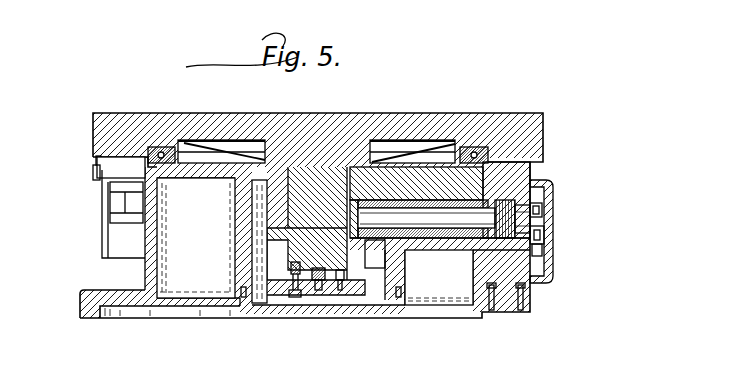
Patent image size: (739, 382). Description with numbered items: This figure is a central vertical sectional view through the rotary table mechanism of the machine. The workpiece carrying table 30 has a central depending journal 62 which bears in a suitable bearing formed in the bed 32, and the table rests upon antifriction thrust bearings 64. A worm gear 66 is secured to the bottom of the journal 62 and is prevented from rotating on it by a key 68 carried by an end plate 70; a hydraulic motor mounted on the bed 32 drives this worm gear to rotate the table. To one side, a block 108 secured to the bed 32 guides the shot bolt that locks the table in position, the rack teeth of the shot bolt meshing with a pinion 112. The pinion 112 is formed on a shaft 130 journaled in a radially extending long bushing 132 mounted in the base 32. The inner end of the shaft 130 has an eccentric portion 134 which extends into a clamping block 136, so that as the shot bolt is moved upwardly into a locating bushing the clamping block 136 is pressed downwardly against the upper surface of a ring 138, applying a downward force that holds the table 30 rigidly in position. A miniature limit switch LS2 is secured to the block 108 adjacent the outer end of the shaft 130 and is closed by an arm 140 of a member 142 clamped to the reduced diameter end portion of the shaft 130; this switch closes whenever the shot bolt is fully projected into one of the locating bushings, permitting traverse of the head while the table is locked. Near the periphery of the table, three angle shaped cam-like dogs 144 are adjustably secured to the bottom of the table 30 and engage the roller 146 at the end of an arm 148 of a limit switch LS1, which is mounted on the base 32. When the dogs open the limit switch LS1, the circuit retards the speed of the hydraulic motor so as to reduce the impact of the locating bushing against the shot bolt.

The workpiece carrying table 30 is at (433, 128).
The bed 32 is at (112, 287).
The central depending journal 62 is at (312, 213).
The antifriction thrust bearings 64 is at (477, 152).
The worm gear 66 is at (353, 290).
The key 68 is at (306, 285).
The end plate 70 is at (340, 283).
The block 108 is at (523, 175).
The pinion 112 is at (498, 210).
The shaft 130 is at (367, 215).
The long bushing 132 is at (460, 194).
The eccentric portion 134 is at (452, 212).
The clamping block 136 is at (333, 185).
The ring 138 is at (268, 238).
The arm 140 is at (548, 233).
The member 142 is at (543, 207).
The cam-like dogs 144 is at (97, 158).
The roller 146 is at (93, 172).
The arm 148 is at (102, 190).
The limit switch LS1 is at (121, 205).
The miniature limit switch LS2 is at (548, 250).